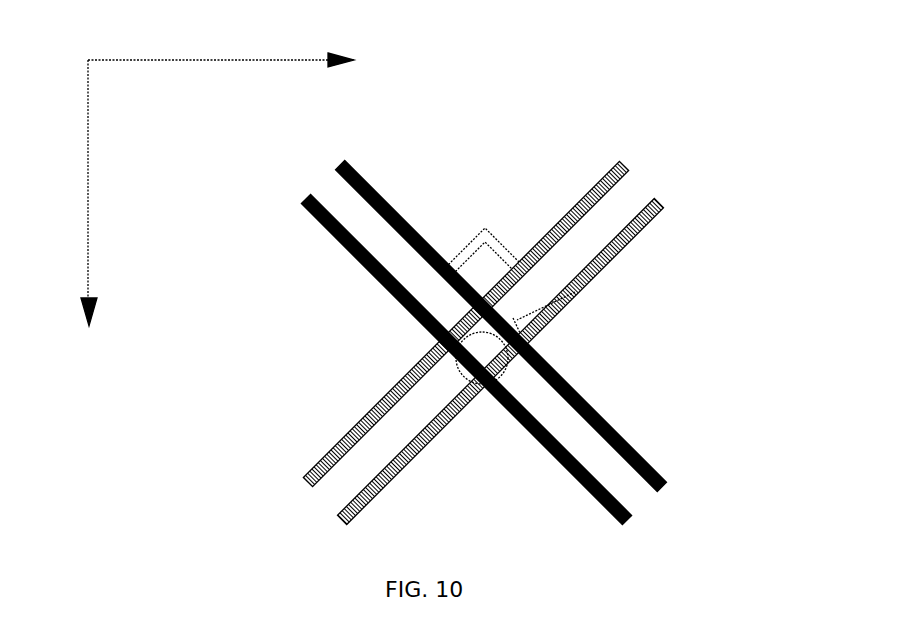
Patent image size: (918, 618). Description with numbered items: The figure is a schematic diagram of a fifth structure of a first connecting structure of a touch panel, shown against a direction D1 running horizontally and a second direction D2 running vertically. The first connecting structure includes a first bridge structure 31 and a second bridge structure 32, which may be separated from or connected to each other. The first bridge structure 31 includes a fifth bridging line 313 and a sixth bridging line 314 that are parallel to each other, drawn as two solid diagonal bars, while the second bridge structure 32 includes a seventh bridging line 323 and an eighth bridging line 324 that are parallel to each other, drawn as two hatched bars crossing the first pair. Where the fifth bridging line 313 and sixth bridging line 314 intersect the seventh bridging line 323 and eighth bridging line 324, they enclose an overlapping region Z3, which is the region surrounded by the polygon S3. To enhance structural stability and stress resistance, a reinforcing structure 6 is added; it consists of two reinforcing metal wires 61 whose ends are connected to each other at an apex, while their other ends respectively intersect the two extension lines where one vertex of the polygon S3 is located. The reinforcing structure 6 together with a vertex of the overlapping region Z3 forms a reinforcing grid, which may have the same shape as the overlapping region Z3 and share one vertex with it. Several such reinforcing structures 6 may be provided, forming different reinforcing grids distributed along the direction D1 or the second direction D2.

The first bridge structure 31 is at (205, 136).
The fifth bridging line 313 is at (340, 164).
The sixth bridging line 314 is at (306, 197).
The second bridge structure 32 is at (765, 135).
The seventh bridging line 323 is at (631, 163).
The eighth bridging line 324 is at (662, 200).
The reinforcing structure 6 is at (525, 143).
The reinforcing metal wire 61 is at (466, 248).
The polygon S3 is at (575, 292).
The overlapping region Z3 is at (472, 383).
The direction D1 is at (221, 40).
The second direction D2 is at (63, 193).